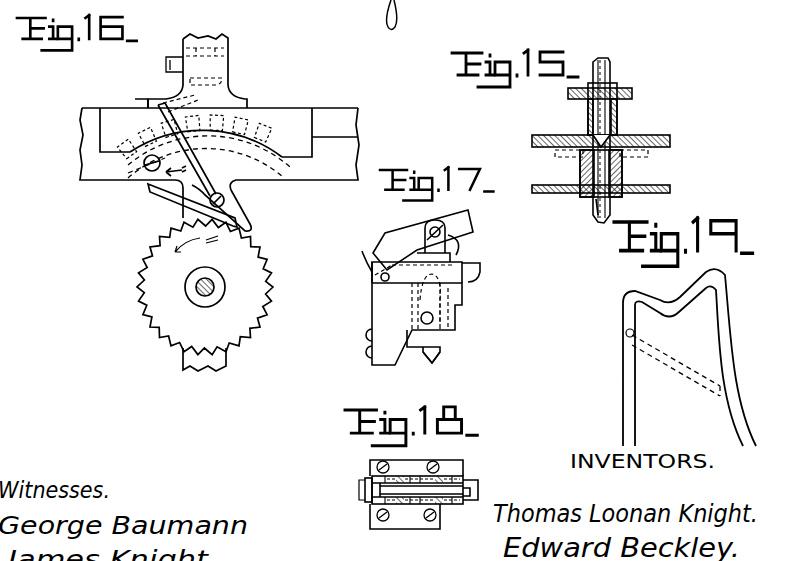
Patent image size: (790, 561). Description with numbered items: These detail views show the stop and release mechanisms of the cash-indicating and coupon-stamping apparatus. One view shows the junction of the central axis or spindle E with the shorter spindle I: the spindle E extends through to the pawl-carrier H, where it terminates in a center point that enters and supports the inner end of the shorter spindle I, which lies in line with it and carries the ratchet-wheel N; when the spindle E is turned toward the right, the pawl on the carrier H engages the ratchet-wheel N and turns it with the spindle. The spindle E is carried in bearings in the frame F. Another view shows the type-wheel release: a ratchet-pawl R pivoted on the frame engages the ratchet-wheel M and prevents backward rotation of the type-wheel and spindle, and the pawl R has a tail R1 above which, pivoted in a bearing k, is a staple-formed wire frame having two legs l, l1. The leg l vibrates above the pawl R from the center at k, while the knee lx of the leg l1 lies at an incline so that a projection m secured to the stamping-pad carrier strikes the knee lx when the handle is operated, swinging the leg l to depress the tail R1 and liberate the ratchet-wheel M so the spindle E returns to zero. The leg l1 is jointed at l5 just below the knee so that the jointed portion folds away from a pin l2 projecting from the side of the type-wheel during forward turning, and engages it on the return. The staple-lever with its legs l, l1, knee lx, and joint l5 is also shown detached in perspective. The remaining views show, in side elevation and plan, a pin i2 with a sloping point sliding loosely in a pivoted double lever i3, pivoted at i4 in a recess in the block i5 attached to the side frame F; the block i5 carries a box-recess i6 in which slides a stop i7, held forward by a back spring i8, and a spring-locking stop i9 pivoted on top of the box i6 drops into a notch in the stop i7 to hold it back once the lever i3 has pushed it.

In FIG. 16, the projection m is at (166, 64).
In FIG. 16, the bearing k is at (147, 102).
In FIG. 16, the leg l is at (150, 124).
In FIG. 19, the leg l is at (730, 357).
In FIG. 16, the leg l1 is at (187, 140).
In FIG. 19, the leg l1 is at (623, 402).
In FIG. 16, the pin l2 is at (209, 154).
In FIG. 16, the ratchet-pawl R is at (236, 212).
In FIG. 16, the tail R1 is at (187, 205).
In FIG. 16, the ratchet-wheel M is at (205, 286).
In FIG. 15, the ratchet-wheel M is at (601, 173).
In FIG. 16, the central axis or spindle E is at (196, 288).
In FIG. 15, the shorter spindle I is at (611, 76).
In FIG. 15, the ratchet-wheel N is at (656, 130).
In FIG. 15, the pawl-carrier H is at (560, 157).
In FIG. 15, the frame F is at (596, 207).
In FIG. 17, the pin i2 is at (437, 356).
In FIG. 17, the pivoted double lever i3 is at (418, 336).
In FIG. 17, the pivot i4 is at (422, 317).
In FIG. 17, the block i5 is at (371, 303).
In FIG. 18, the block i5 is at (416, 494).
In FIG. 17, the box-recess i6 is at (417, 273).
In FIG. 18, the box-recess i6 is at (411, 470).
In FIG. 17, the sliding stop i7 is at (470, 275).
In FIG. 18, the sliding stop i7 is at (478, 488).
In FIG. 17, the back spring i8 is at (366, 262).
In FIG. 18, the back spring i8 is at (364, 488).
In FIG. 17, the spring-locking stop i9 is at (412, 238).
In FIG. 19, the knee lx is at (670, 293).
In FIG. 19, the joint l5 is at (625, 333).